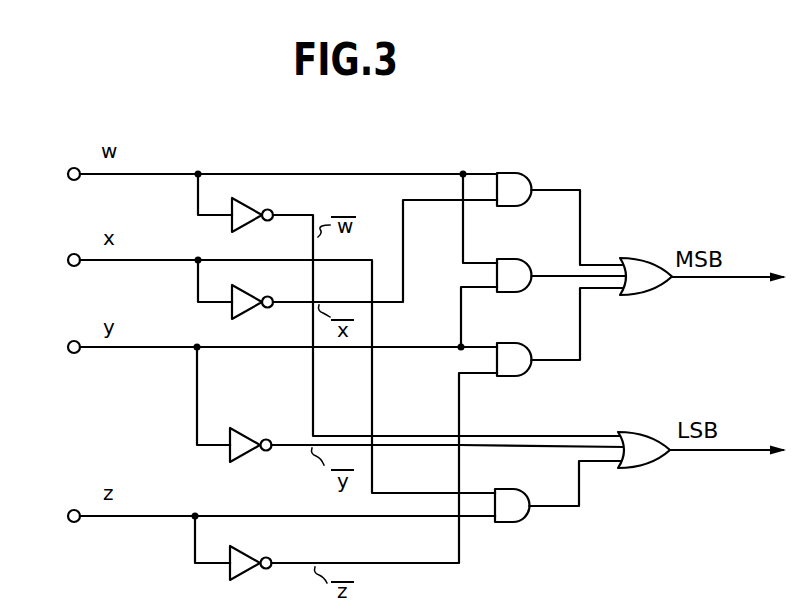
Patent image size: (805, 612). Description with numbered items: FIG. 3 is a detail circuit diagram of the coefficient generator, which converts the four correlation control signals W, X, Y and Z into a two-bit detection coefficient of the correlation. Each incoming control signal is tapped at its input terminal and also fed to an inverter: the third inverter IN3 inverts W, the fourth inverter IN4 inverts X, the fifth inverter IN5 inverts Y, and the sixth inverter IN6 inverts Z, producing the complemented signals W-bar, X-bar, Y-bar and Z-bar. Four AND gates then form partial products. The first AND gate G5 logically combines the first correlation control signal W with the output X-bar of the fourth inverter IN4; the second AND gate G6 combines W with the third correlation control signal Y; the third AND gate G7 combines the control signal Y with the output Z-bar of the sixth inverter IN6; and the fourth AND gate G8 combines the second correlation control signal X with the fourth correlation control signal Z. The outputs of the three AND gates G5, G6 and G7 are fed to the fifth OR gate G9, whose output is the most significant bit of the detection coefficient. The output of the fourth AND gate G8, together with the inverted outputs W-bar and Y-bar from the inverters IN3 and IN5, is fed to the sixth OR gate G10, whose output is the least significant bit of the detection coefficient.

The third inverter IN3 is at (247, 205).
The fourth inverter IN4 is at (247, 292).
The fifth inverter IN5 is at (245, 436).
The sixth inverter IN6 is at (245, 553).
The first AND gate G5 is at (522, 172).
The second AND gate G6 is at (529, 258).
The third AND gate G7 is at (529, 353).
The fourth AND gate G8 is at (528, 496).
The fifth OR gate G9 is at (640, 258).
The sixth OR gate G10 is at (645, 432).